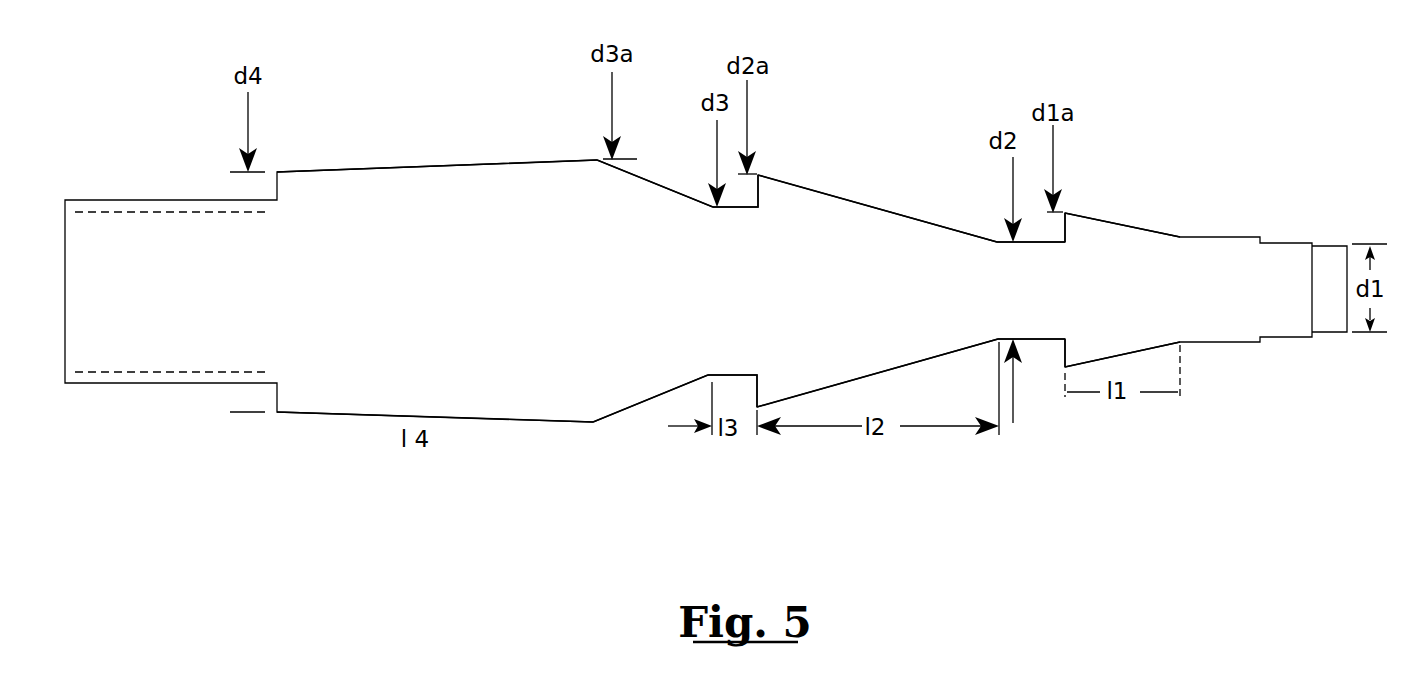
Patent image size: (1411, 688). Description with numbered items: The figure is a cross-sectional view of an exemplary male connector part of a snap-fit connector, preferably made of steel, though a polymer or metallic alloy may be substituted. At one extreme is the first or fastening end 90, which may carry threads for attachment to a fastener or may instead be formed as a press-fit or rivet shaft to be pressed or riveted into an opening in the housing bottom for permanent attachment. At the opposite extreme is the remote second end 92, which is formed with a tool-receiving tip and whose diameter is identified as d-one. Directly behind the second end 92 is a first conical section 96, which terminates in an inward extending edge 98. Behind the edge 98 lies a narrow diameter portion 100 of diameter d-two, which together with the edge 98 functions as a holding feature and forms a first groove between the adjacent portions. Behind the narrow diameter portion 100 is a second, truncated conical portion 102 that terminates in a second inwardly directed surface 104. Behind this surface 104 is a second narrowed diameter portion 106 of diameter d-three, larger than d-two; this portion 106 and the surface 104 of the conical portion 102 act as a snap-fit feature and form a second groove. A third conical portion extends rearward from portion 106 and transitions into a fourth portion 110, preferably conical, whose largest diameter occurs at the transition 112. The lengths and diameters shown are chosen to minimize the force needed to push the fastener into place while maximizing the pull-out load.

The first or fastening end 90 is at (96, 190).
The second end 92 is at (1218, 237).
The first conical section 96 is at (1127, 230).
The inward extending edge 98 is at (1067, 228).
The narrow diameter portion 100 is at (1028, 333).
The second conical portion 102 is at (860, 207).
The second inwardly directed surface 104 is at (760, 191).
The second narrowed diameter portion 106 is at (740, 367).
The fourth portion 110 is at (358, 192).
The transition 112 is at (625, 177).